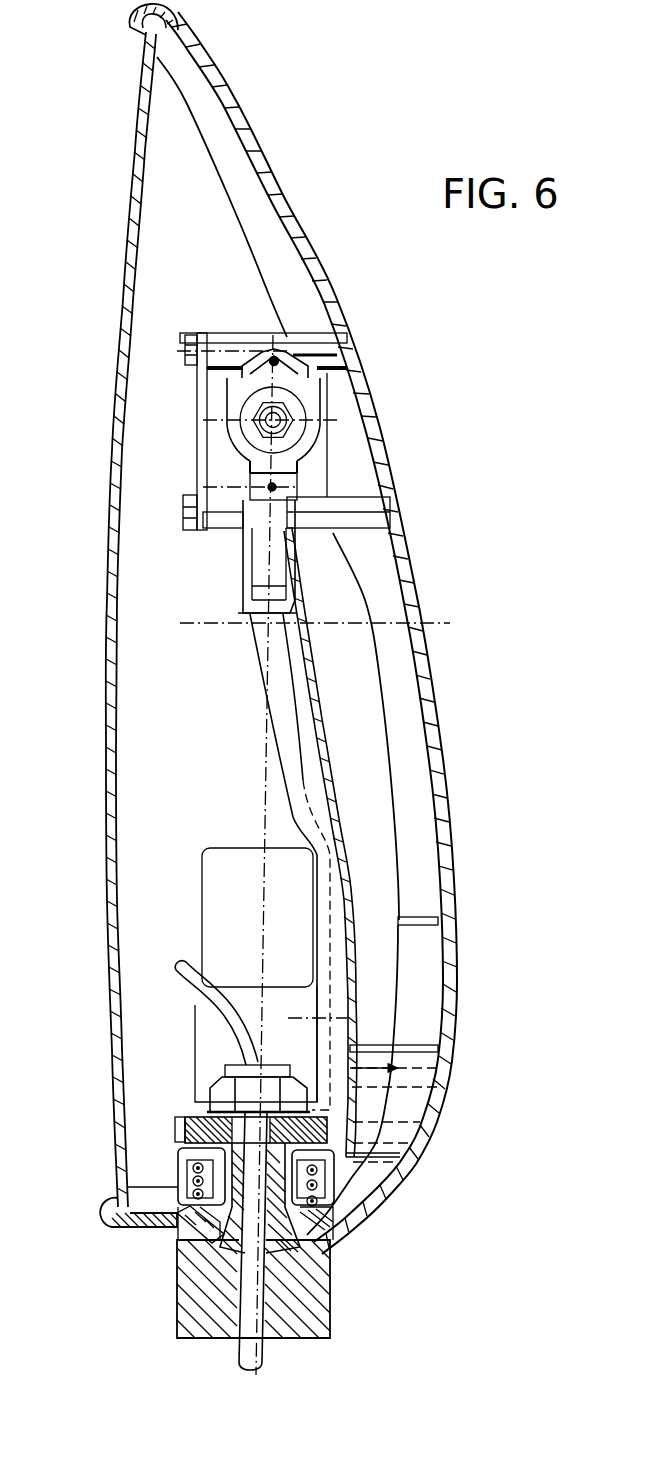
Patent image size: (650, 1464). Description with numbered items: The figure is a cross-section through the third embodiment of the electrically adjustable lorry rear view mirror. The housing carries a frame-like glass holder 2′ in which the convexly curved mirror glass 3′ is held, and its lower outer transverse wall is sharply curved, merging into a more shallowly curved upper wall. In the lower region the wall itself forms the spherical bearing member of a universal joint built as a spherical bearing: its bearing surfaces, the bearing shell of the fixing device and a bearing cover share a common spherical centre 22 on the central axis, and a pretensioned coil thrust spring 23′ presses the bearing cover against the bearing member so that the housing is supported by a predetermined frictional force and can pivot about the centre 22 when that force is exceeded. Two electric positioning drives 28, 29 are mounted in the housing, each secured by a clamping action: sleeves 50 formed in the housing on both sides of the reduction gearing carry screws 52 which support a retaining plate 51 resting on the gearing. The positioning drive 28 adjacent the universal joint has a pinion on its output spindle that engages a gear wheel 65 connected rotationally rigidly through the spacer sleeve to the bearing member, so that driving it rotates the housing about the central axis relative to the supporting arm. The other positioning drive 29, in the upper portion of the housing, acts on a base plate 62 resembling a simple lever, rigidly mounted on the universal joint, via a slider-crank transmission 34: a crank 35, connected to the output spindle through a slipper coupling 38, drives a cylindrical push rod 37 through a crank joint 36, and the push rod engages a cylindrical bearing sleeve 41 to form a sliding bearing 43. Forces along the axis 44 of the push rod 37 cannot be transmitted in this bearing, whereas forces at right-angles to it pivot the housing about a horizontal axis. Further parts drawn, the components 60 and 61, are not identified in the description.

The glass holder 2′ is at (130, 22).
The mirror glass 3′ is at (140, 114).
The spherical centre 22 is at (258, 1103).
The thrust spring 23′ is at (336, 1197).
The positioning drive 28 is at (202, 912).
The positioning drive 29 is at (215, 409).
The slider-crank transmission 34 is at (349, 427).
The crank 35 is at (285, 460).
The crank joint 36 is at (283, 490).
The push rod 37 is at (260, 556).
The slipper coupling 38 is at (300, 415).
The bearing sleeve 41 is at (288, 550).
The sliding bearing 43 is at (296, 580).
The axis of the push rod 44 is at (265, 552).
The sleeves 50 is at (235, 341).
The retaining plate 51 is at (205, 397).
The screws 52 is at (197, 340).
The cable 60 is at (240, 1066).
The shaft 61 is at (245, 1347).
The base plate 62 is at (293, 738).
The gear wheel 65 is at (185, 1124).